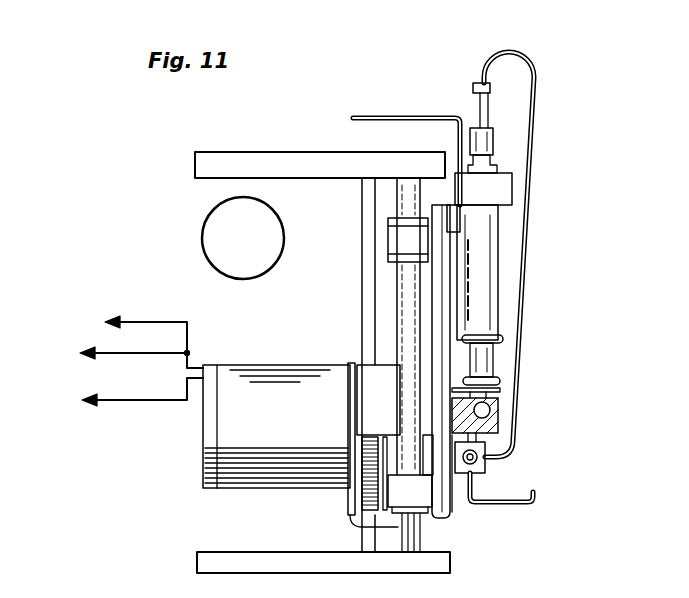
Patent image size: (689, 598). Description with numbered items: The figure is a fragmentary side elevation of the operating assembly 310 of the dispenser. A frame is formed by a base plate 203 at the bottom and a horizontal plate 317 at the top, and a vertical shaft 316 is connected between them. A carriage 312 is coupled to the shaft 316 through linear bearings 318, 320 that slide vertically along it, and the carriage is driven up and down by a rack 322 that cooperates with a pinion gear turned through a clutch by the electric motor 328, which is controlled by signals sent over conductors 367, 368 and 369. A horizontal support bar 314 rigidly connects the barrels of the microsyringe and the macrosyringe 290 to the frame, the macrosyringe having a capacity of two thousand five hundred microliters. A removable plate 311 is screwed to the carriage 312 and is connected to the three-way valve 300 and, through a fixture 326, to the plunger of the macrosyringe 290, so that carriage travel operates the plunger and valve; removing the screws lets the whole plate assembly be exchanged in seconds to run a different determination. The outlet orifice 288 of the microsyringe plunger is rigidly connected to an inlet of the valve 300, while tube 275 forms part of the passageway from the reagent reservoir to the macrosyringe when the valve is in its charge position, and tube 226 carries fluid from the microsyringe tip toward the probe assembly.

The base plate 203 is at (197, 562).
The tube 226 is at (430, 112).
The tube 275 is at (535, 490).
The outlet orifice 288 is at (541, 75).
The macrosyringe 290 is at (497, 258).
The 3-way valve 300 is at (485, 470).
The operating assembly 310 is at (108, 510).
The removable plate 311 is at (453, 512).
The carriage 312 is at (415, 330).
The horizontal support bar 314 is at (512, 192).
The vertical shaft 316 is at (420, 537).
The horizontal plate 317 is at (195, 165).
The linear bearing 318 is at (388, 248).
The linear bearing 320 is at (430, 520).
The rack 322 is at (360, 527).
The fixture 326 is at (500, 428).
The electric motor 328 is at (203, 422).
The conductor 367 is at (135, 322).
The conductor 368 is at (151, 404).
The conductor 369 is at (114, 352).